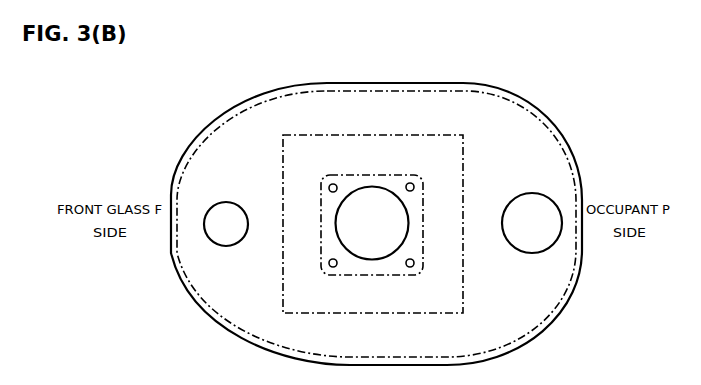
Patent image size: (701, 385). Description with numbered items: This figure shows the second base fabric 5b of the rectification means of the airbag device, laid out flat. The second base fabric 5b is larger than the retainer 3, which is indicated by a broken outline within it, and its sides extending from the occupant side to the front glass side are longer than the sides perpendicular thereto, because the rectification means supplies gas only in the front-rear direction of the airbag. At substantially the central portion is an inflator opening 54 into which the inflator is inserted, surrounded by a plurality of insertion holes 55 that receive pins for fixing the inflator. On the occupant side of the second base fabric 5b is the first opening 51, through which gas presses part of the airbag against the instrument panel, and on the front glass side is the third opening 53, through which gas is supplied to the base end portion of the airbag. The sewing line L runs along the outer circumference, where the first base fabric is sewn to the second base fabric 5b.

The second base fabric 5b is at (389, 98).
The retainer 3 is at (463, 290).
The inflator opening 54 is at (335, 223).
The insertion holes 55 is at (414, 184).
The third opening 53 is at (229, 202).
The first opening 51 is at (532, 193).
The sewing line L is at (252, 330).